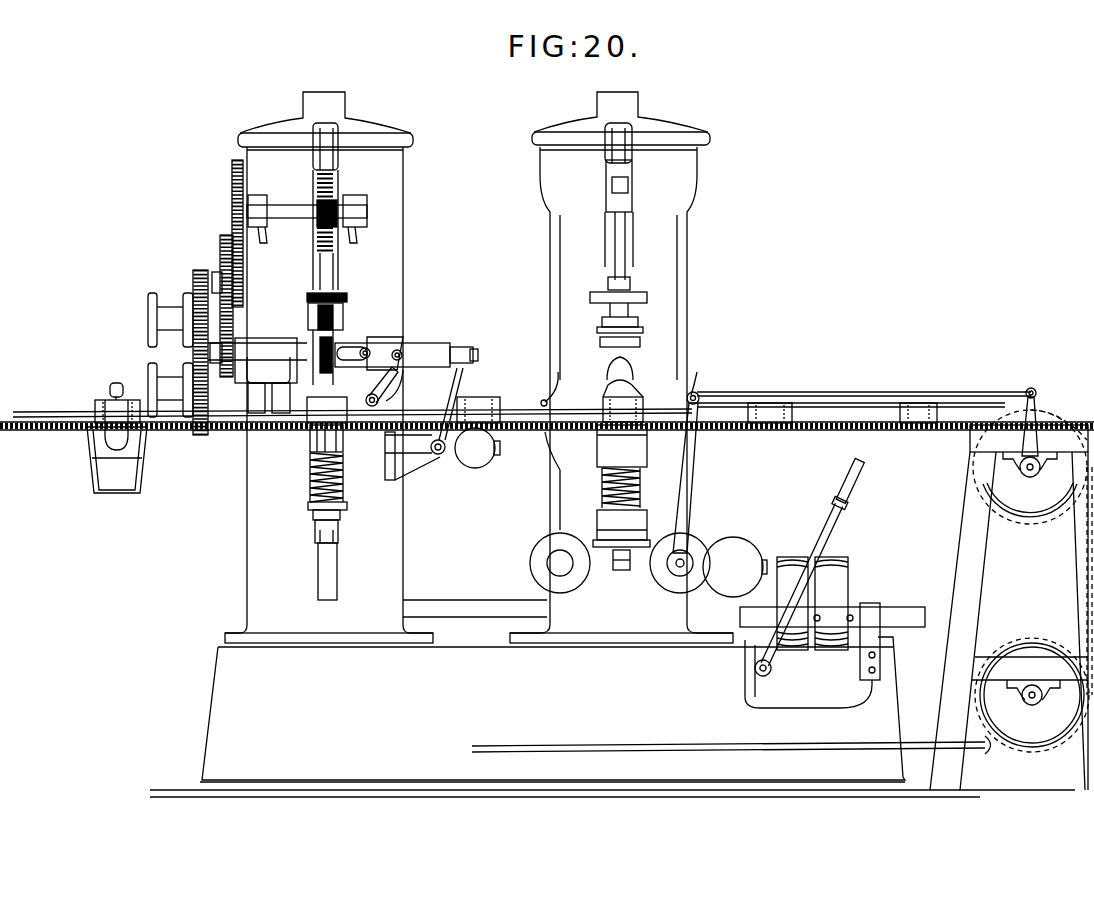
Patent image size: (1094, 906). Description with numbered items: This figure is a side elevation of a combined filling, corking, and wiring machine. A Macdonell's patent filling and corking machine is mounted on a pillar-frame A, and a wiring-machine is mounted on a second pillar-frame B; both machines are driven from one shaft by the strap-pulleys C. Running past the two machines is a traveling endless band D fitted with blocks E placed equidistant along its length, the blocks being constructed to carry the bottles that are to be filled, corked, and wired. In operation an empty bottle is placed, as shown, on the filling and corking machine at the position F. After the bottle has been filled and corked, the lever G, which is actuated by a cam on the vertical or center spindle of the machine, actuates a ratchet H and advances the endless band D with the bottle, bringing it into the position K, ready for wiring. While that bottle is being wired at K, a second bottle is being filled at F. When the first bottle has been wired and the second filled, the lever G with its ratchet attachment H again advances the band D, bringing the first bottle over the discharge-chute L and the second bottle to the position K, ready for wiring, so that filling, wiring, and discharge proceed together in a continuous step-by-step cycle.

The pillar-frame A is at (585, 367).
The pillar-frame B is at (313, 367).
The strap-pulleys C is at (832, 582).
The traveling endless band D is at (547, 578).
The blocks E is at (297, 428).
The filling and corking position F is at (621, 463).
The lever G is at (695, 472).
The ratchet H is at (1027, 397).
The wiring position K is at (327, 494).
The discharge-chute L is at (117, 446).